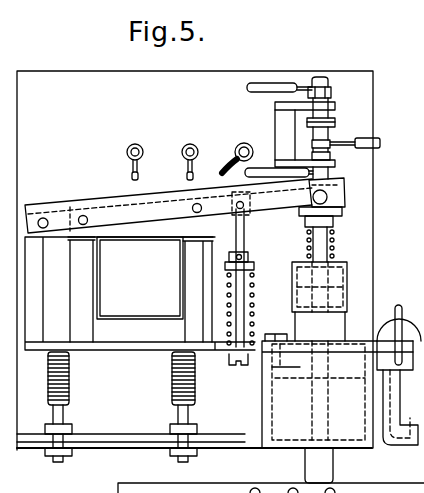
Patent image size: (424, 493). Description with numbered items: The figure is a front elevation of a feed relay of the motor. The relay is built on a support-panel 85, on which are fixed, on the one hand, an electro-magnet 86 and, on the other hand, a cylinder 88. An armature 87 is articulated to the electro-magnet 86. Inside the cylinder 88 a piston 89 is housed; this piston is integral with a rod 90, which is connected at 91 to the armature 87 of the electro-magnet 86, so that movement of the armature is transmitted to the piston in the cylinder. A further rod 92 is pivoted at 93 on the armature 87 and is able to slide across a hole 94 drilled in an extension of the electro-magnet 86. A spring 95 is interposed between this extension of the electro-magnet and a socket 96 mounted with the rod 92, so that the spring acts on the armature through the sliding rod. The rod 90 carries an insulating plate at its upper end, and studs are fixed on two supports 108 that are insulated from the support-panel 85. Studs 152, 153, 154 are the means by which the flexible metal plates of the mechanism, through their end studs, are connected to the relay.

The support-panel 85 is at (360, 227).
The electro-magnet 86 is at (81, 270).
The armature 87 is at (108, 210).
The cylinder 88 is at (357, 412).
The piston 89 is at (347, 365).
The rod 90 is at (334, 297).
The connection 91 is at (336, 197).
The rod 92 is at (247, 227).
The pivot 93 is at (233, 214).
The hole 94 is at (239, 352).
The spring 95 is at (258, 304).
The socket 96 is at (252, 259).
The supports 108 is at (283, 116).
The stud 152 is at (185, 145).
The stud 153 is at (128, 146).
The stud 154 is at (237, 144).